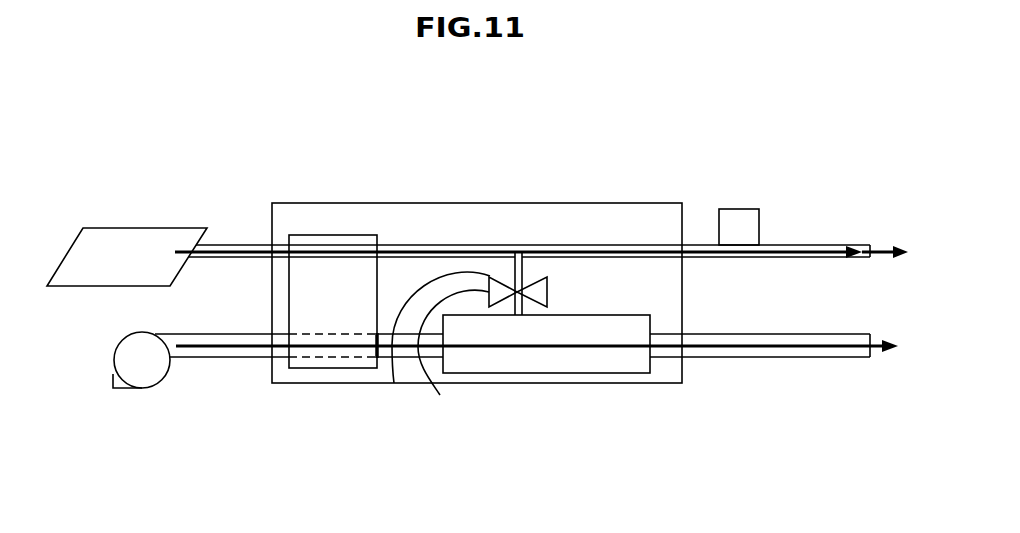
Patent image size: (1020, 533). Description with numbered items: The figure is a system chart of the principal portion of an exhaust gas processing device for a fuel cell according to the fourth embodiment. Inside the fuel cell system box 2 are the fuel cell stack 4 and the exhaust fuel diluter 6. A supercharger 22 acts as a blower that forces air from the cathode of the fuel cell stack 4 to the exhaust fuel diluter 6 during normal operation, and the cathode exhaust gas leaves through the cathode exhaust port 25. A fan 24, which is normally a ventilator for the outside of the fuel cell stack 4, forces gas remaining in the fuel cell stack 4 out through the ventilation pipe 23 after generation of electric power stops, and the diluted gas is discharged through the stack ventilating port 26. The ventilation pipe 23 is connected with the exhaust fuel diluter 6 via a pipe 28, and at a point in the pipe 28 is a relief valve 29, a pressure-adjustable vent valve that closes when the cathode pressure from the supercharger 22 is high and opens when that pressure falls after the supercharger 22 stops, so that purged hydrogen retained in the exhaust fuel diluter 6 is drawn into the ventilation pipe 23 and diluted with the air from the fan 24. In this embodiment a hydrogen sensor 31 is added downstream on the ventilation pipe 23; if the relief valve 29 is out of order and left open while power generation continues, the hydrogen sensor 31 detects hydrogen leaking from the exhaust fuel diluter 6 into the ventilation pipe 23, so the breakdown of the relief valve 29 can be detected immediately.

The fuel cell system box 2 is at (413, 202).
The fuel cell stack 4 is at (335, 369).
The exhaust fuel diluter 6 is at (547, 373).
The supercharger 22 is at (168, 377).
The ventilation pipe 23 is at (515, 245).
The fan 24 is at (65, 257).
The cathode exhaust port 25 is at (872, 352).
The stack ventilating port 26 is at (877, 243).
The pipe 28 is at (394, 383).
The relief valve 29 is at (440, 395).
The hydrogen sensor 31 is at (740, 209).